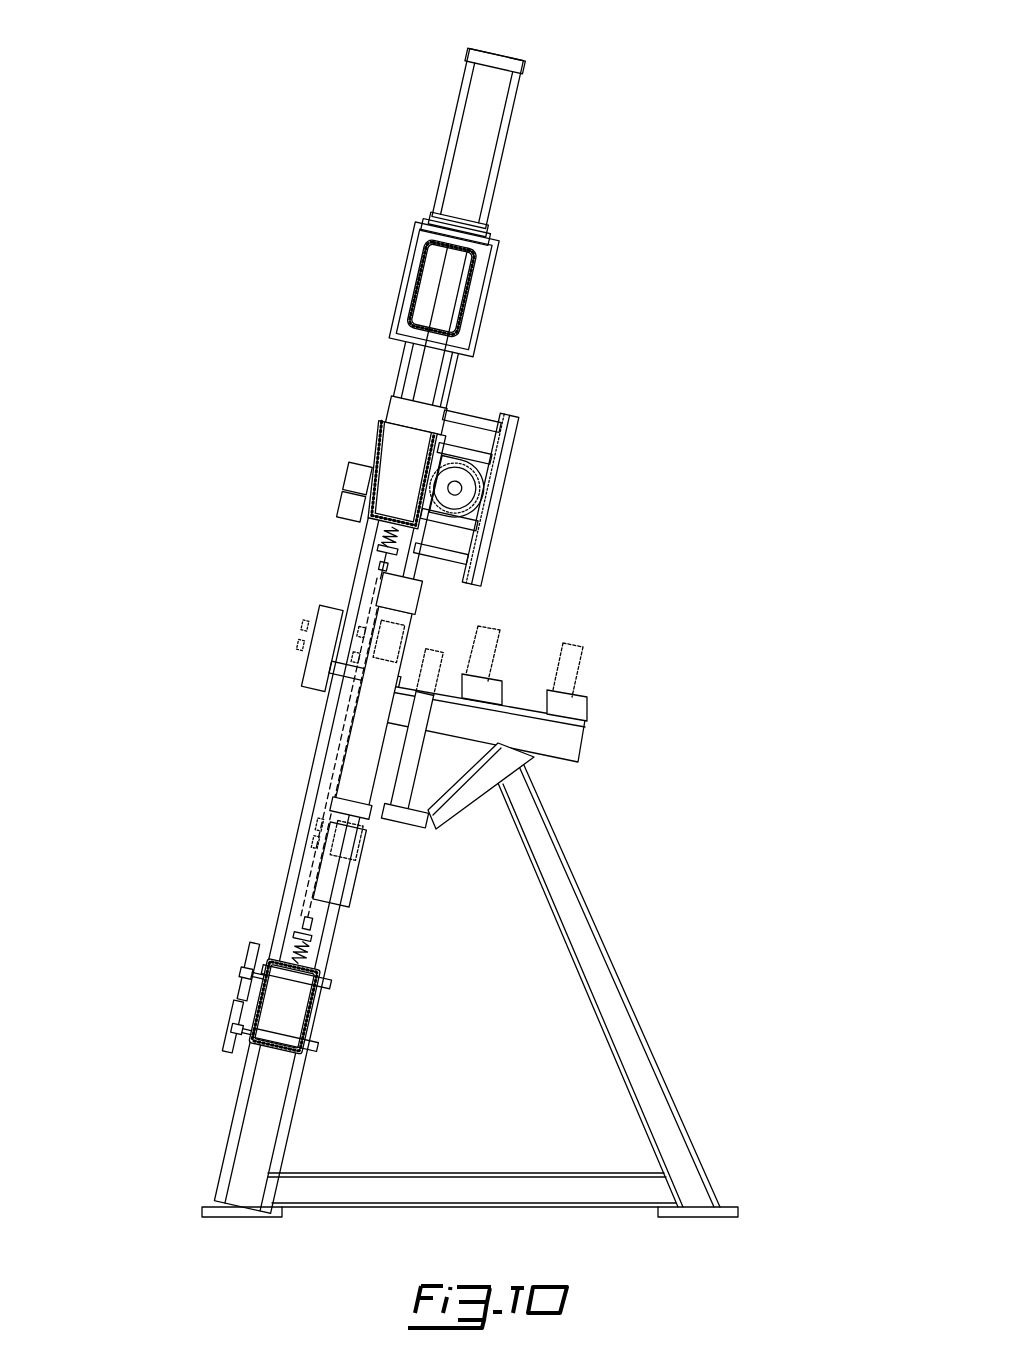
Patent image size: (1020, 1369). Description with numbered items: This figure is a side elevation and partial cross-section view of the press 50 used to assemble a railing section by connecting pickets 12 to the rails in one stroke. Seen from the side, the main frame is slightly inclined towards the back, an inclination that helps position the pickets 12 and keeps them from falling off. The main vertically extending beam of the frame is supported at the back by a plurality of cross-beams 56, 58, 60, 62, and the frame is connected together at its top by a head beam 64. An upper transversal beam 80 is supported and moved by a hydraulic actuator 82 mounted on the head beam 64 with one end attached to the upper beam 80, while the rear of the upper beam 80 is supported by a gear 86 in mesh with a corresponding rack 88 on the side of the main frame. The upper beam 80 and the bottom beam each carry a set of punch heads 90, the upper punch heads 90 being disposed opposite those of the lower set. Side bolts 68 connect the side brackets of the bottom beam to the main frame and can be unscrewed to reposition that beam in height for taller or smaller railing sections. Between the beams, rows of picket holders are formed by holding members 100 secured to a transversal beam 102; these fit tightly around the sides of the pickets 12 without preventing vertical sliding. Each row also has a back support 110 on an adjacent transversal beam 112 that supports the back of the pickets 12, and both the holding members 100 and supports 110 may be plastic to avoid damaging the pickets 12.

The press 50 is at (195, 113).
The picket 12 is at (313, 875).
The cross-beam 56 is at (448, 1173).
The cross-beam 58 is at (628, 994).
The cross-beam 60 is at (450, 798).
The cross-beam 62 is at (568, 738).
The head beam 64 is at (470, 307).
The side bolt 68 is at (232, 983).
The upper transversal beam 80 is at (378, 447).
The hydraulic actuator 82 is at (508, 106).
The gear 86 is at (470, 484).
The rack 88 is at (485, 512).
The punch head 90 is at (340, 550).
The holding member 100 is at (360, 636).
The transversal beam 102 is at (398, 621).
The back support 110 is at (367, 822).
The transversal beam 112 is at (340, 862).